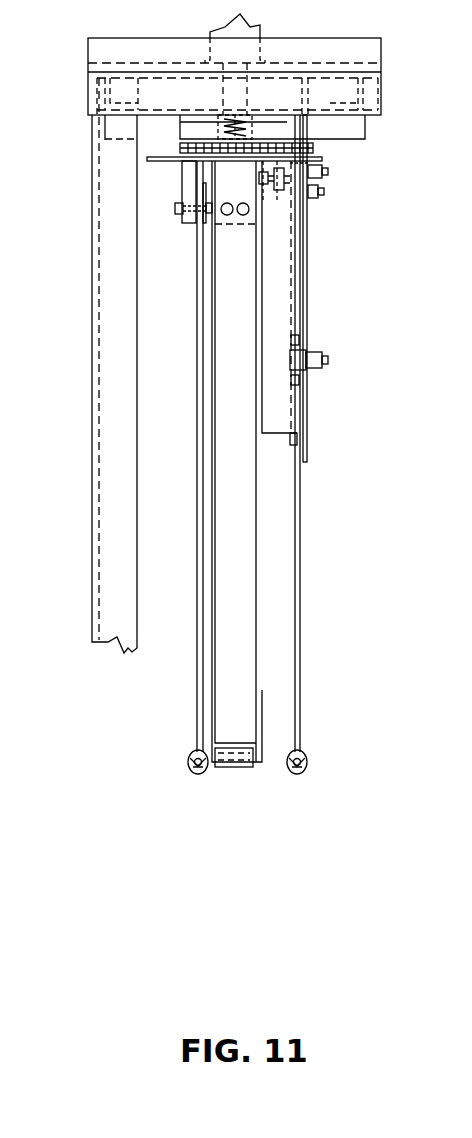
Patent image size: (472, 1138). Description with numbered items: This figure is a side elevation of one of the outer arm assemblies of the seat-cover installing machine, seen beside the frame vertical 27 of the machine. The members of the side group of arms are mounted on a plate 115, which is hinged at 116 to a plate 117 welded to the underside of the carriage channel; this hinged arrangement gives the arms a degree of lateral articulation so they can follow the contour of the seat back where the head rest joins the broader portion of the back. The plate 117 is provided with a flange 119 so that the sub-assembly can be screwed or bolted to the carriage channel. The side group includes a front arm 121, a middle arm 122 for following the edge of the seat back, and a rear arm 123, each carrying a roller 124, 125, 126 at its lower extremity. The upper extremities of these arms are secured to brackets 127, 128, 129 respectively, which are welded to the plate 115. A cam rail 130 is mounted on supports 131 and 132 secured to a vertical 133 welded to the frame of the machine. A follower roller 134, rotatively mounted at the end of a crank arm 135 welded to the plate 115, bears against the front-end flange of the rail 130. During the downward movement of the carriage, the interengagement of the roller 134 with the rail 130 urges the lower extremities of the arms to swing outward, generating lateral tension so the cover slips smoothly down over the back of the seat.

The vertical 27 is at (93, 505).
The plate 115 is at (160, 162).
The hinge 116 is at (318, 150).
The plate 117 is at (180, 143).
The flange 119 is at (285, 130).
The front arm 121 is at (200, 500).
The middle arm 122 is at (250, 566).
The rear arm 123 is at (300, 500).
The roller 124 is at (198, 774).
The roller 125 is at (237, 767).
The roller 126 is at (297, 775).
The bracket 127 is at (190, 223).
The bracket 128 is at (238, 226).
The bracket 129 is at (300, 200).
The cam rail 130 is at (283, 295).
The support 131 is at (300, 162).
The support 132 is at (298, 345).
The vertical 133 is at (305, 423).
The follower roller 134 is at (268, 198).
The crank arm 135 is at (263, 215).